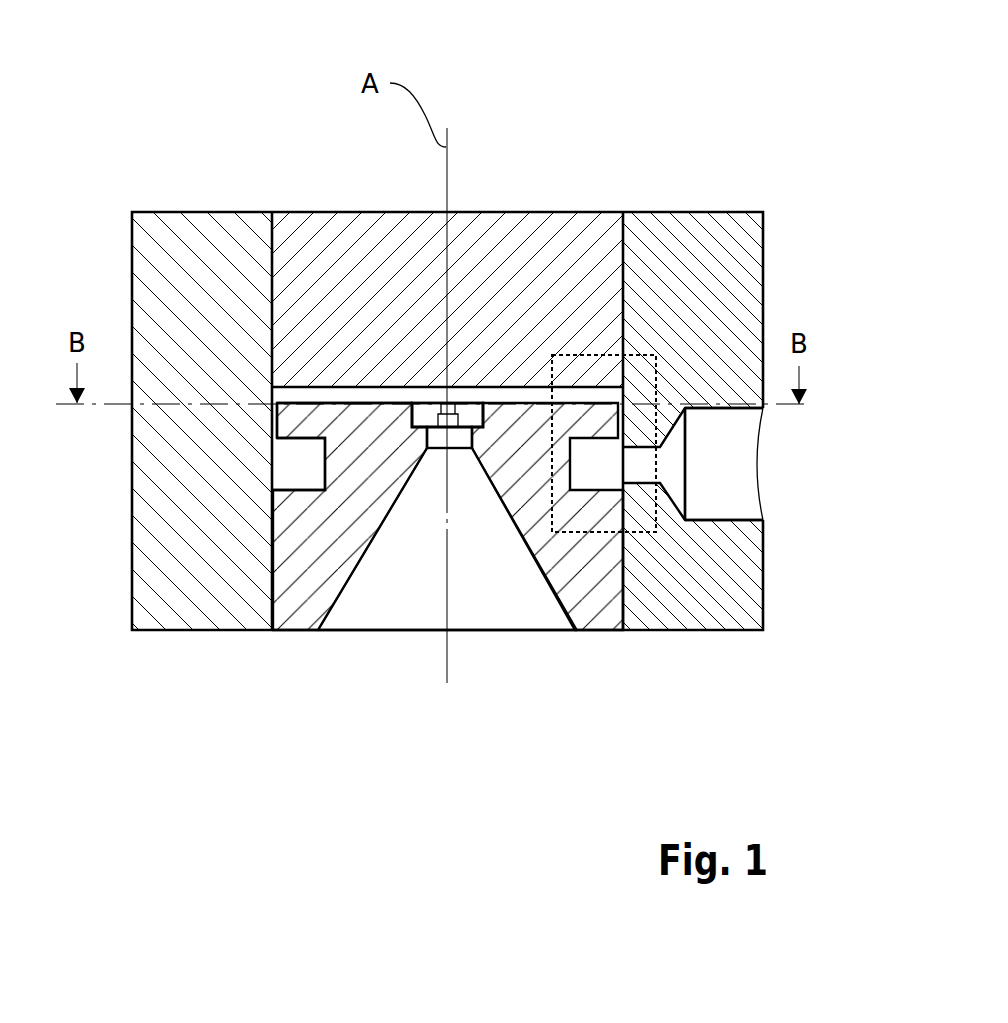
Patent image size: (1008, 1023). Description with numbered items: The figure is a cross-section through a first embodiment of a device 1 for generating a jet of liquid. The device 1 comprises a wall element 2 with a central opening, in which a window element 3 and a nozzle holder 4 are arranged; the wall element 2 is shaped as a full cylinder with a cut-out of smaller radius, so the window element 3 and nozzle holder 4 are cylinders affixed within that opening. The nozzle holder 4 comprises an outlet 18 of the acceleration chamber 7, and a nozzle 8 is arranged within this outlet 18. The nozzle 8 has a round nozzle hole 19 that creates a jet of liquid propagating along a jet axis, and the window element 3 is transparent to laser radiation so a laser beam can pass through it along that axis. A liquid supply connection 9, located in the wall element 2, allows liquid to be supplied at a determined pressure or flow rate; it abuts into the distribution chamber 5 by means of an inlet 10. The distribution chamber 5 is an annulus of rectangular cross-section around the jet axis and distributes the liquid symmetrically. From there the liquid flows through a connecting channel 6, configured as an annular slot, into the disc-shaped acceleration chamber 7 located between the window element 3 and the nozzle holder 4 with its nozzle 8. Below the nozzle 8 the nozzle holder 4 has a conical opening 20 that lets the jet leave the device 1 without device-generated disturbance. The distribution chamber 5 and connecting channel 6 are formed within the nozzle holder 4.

The device 1 is at (130, 142).
The wall element 2 is at (752, 292).
The window element 3 is at (576, 215).
The nozzle holder 4 is at (303, 623).
The distribution chamber 5 is at (292, 479).
The connecting channel 6 is at (268, 419).
The acceleration chamber 7 is at (349, 385).
The nozzle 8 is at (427, 442).
The liquid supply connection 9 is at (710, 470).
The inlet 10 is at (623, 490).
The outlet 18 is at (458, 412).
The nozzle hole 19 is at (446, 416).
The conical opening 20 is at (512, 595).